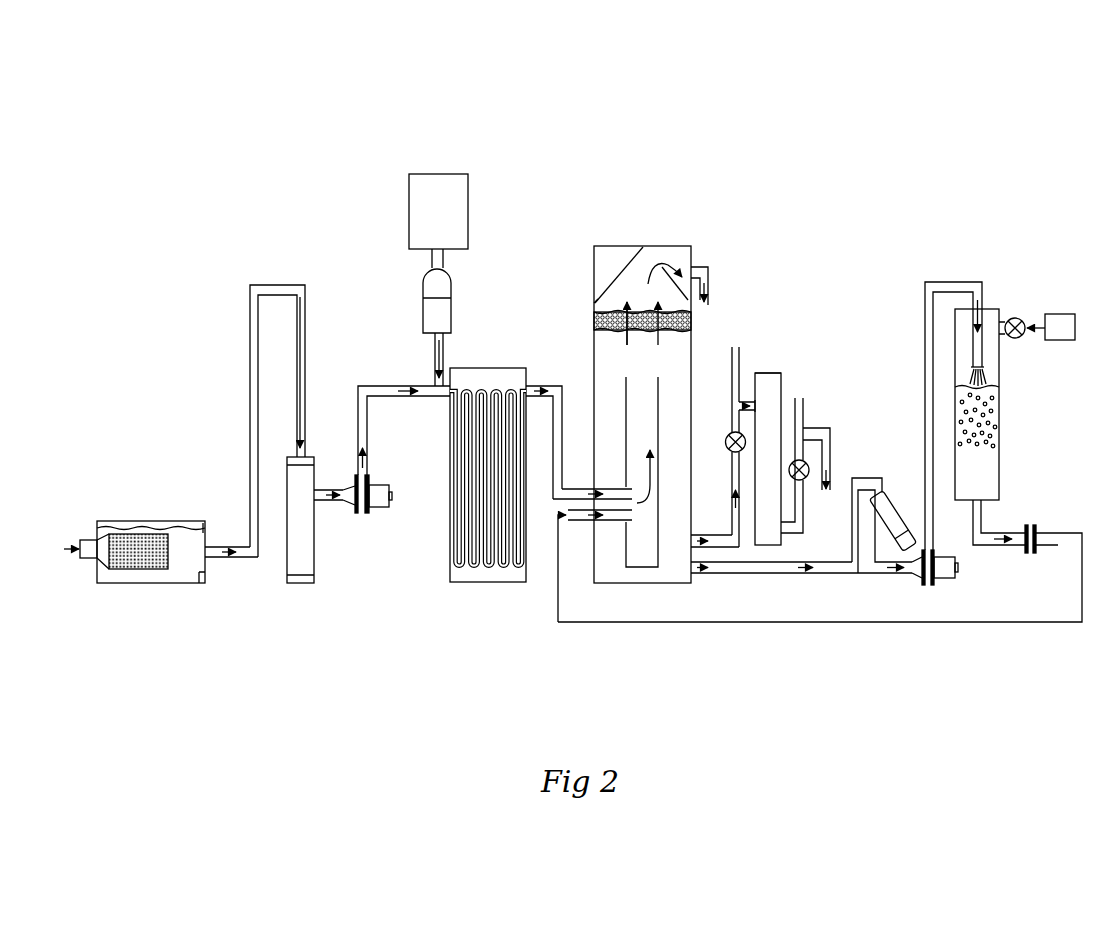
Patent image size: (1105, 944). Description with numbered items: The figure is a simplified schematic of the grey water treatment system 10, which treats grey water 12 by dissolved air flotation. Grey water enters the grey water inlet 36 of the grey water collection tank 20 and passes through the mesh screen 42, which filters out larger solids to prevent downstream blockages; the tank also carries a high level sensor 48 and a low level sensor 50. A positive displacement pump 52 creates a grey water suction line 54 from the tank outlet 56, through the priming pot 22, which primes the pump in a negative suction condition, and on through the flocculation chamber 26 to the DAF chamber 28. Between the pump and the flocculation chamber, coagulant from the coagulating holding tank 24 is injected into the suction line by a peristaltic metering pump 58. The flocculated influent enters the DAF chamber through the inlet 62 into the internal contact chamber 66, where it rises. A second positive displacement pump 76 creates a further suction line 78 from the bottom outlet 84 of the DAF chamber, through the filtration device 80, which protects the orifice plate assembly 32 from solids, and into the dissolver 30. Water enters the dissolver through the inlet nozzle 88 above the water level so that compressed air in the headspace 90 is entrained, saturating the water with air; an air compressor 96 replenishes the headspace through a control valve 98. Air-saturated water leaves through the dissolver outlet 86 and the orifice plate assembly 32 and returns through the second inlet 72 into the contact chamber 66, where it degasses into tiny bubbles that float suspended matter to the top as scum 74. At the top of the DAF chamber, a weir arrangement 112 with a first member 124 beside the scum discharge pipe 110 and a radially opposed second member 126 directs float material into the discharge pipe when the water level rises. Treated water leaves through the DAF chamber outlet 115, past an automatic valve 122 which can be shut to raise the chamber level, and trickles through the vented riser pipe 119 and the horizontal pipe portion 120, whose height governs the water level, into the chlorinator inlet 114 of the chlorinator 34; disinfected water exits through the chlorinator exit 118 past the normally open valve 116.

The system 10 is at (282, 232).
The grey water 12 is at (152, 527).
The grey water collection tank 20 is at (124, 518).
The priming pot 22 is at (300, 588).
The coagulating holding tank 24 is at (437, 172).
The flocculation chamber 26 is at (473, 588).
The DAF chamber 28 is at (626, 244).
The dissolver 30 is at (1004, 440).
The orifice plate assembly 32 is at (1036, 523).
The chlorinator 34 is at (786, 386).
The grey water inlet 36 is at (90, 560).
The screen 42 is at (142, 573).
The high level sensor 48 is at (204, 520).
The low level sensor 50 is at (202, 578).
The positive displacement pump 52 is at (363, 518).
The grey water suction line 54 is at (249, 328).
The outlet 56 is at (215, 553).
The peristaltic metering pump 58 is at (457, 313).
The inlet 62 is at (610, 487).
The contact chamber 66 is at (660, 428).
The second inlet 72 is at (612, 523).
The scum 74 is at (600, 308).
The second positive displacement pump 76 is at (950, 588).
The further suction line 78 is at (846, 573).
The filtration device 80 is at (905, 508).
The bottom outlet 84 is at (714, 576).
The outlet 86 is at (976, 517).
The inlet nozzle 88 is at (984, 357).
The headspace 90 is at (967, 345).
The air compressor 96 is at (1062, 312).
The control valve 98 is at (1014, 317).
The scum discharge pipe 110 is at (706, 270).
The weir arrangement 112 is at (638, 254).
The chlorinator inlet 114 is at (760, 410).
The outlet 115 is at (709, 533).
The valve 116 is at (804, 482).
The chlorinator exit 118 is at (792, 530).
The riser pipe 119 is at (740, 370).
The horizontal pipe portion 120 is at (757, 398).
The automatic valve 122 is at (724, 442).
The first member 124 is at (675, 268).
The second member 126 is at (612, 328).